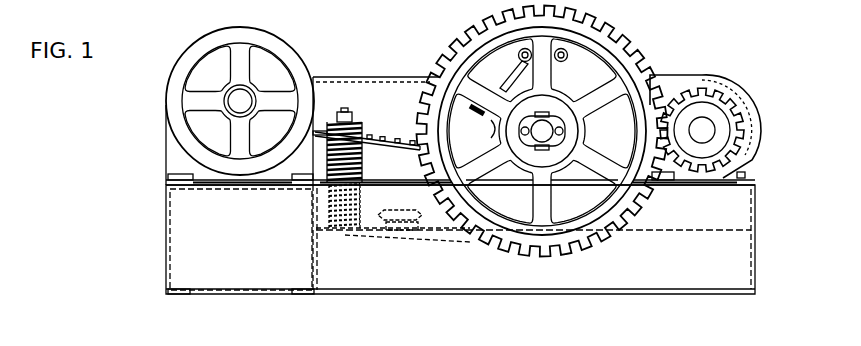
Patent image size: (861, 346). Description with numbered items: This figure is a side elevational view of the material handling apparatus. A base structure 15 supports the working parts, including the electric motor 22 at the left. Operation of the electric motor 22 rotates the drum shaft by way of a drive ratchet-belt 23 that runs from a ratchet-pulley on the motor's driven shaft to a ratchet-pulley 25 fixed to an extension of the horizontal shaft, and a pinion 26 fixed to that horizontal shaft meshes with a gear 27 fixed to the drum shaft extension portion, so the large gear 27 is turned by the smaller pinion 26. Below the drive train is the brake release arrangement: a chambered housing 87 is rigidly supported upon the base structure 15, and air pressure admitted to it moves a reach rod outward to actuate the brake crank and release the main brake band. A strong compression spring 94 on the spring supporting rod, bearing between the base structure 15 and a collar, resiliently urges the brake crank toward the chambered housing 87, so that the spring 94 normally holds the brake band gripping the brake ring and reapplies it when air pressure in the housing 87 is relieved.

The base structure 15 is at (180, 271).
The electric motor 22 is at (173, 65).
The drive ratchet-belt 23 is at (364, 76).
The ratchet-pulley 25 is at (722, 93).
The pinion 26 is at (710, 163).
The gear 27 is at (479, 221).
The chambered housing 87 is at (396, 211).
The strong compression spring 94 is at (362, 158).